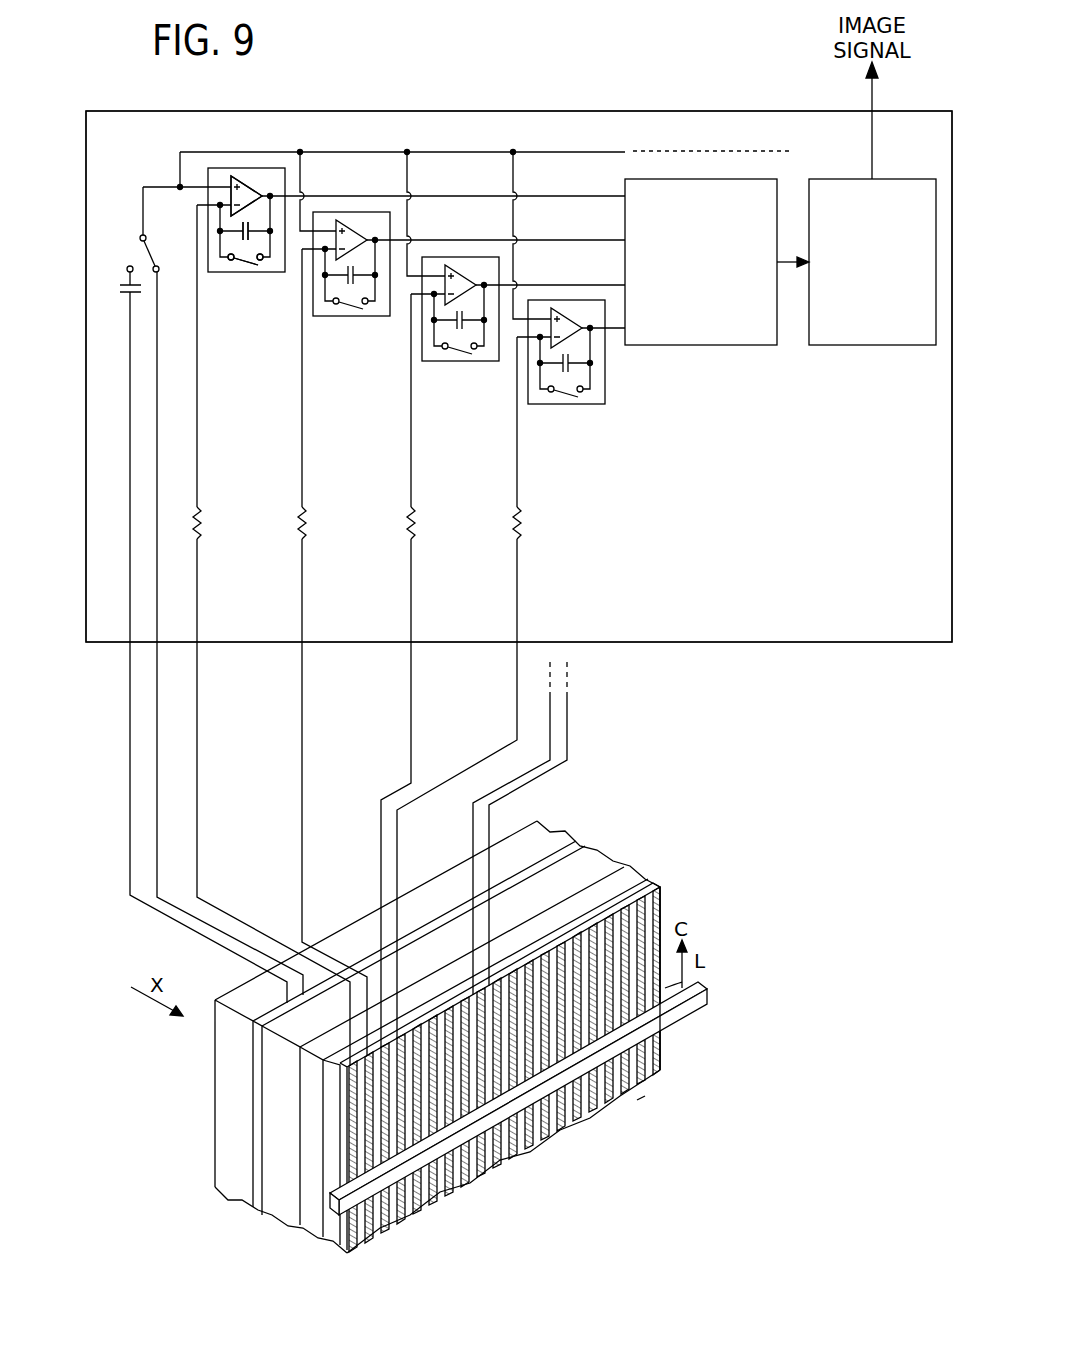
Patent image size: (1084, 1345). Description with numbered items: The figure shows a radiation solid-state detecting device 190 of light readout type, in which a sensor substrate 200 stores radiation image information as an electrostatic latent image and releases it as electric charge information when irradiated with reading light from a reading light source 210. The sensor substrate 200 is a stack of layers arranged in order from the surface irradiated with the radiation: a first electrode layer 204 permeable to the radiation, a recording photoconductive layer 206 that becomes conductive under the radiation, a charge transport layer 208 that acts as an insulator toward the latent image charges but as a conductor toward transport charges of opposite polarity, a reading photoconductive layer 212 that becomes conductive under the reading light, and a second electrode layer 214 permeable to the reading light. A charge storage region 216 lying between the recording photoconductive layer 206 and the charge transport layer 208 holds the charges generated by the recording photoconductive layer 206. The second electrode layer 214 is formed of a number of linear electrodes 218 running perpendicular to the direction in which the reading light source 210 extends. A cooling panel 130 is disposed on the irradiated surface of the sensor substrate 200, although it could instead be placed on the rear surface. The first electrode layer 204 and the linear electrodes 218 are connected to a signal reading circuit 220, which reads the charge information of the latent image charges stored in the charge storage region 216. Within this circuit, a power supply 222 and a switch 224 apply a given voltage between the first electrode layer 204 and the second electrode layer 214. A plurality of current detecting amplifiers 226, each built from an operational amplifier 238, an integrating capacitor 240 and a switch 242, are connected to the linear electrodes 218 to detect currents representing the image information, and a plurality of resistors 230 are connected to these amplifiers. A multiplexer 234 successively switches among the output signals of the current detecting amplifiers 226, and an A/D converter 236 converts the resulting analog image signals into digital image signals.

The radiation solid-state detecting device 190 is at (530, 51).
The signal reading circuit 220 is at (700, 111).
The power supply 222 is at (122, 292).
The switch 224 is at (136, 256).
The current detecting amplifier 226 is at (275, 167).
The resistor 230 is at (204, 530).
The multiplexer 234 is at (752, 346).
The A/D converter 236 is at (913, 346).
The operational amplifier 238 is at (250, 177).
The integrating capacitor 240 is at (245, 243).
The switch 242 is at (238, 268).
The cooling panel 130 is at (236, 1082).
The sensor substrate 200 is at (558, 1041).
The first electrode layer 204 is at (570, 836).
The recording photoconductive layer 206 is at (590, 866).
The charge transport layer 208 is at (625, 876).
The reading light source 210 is at (678, 1012).
The reading photoconductive layer 212 is at (650, 882).
The second electrode layer 214 is at (662, 1060).
The charge storage region 216 is at (560, 893).
The linear electrode 218 is at (627, 1084).